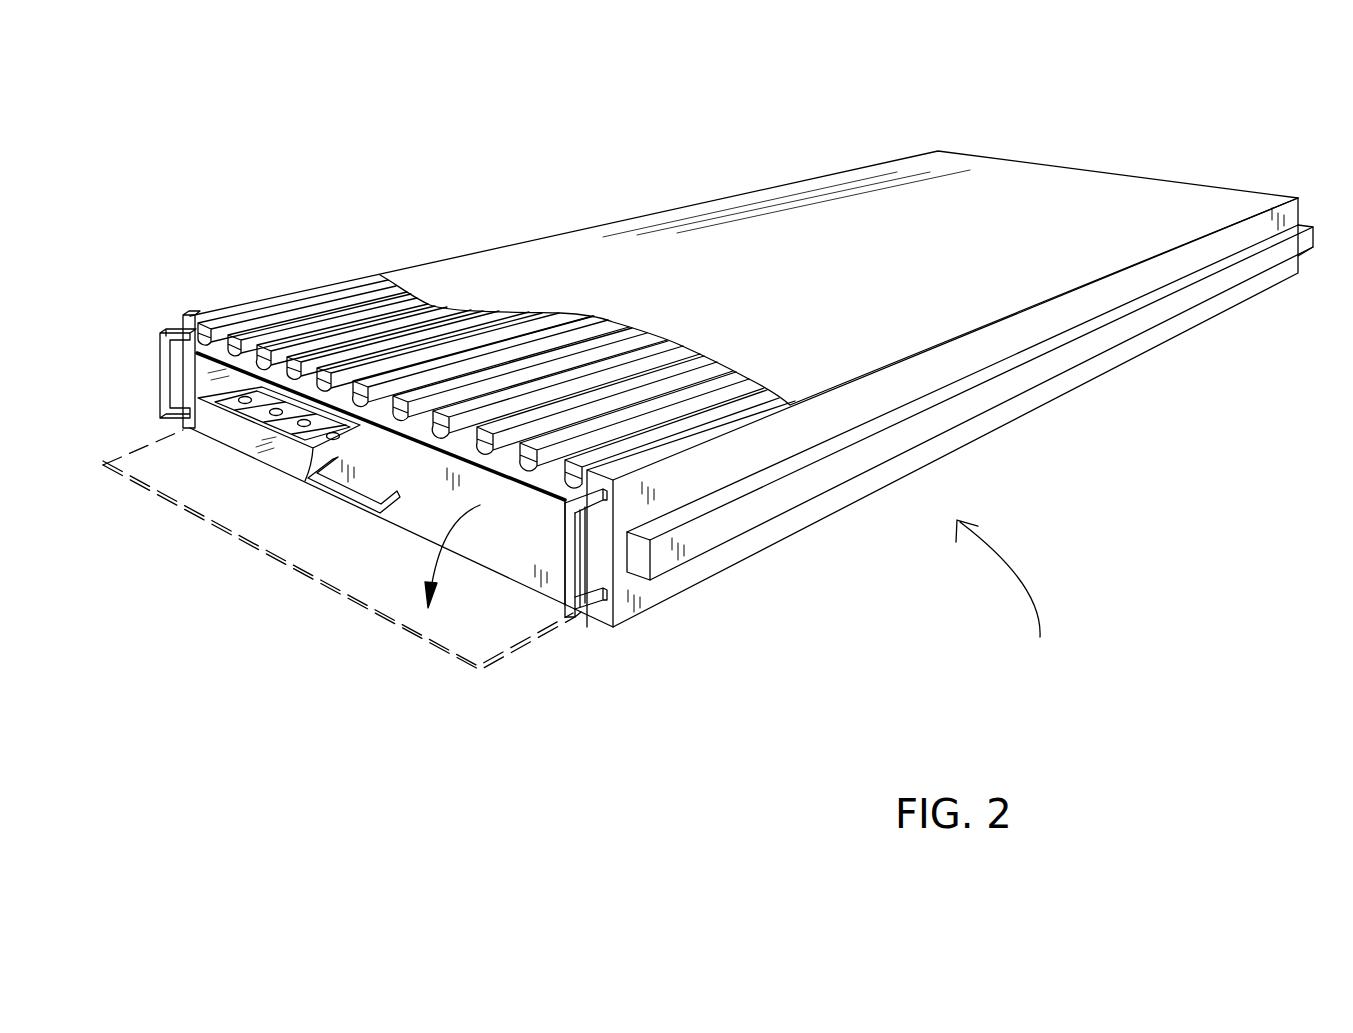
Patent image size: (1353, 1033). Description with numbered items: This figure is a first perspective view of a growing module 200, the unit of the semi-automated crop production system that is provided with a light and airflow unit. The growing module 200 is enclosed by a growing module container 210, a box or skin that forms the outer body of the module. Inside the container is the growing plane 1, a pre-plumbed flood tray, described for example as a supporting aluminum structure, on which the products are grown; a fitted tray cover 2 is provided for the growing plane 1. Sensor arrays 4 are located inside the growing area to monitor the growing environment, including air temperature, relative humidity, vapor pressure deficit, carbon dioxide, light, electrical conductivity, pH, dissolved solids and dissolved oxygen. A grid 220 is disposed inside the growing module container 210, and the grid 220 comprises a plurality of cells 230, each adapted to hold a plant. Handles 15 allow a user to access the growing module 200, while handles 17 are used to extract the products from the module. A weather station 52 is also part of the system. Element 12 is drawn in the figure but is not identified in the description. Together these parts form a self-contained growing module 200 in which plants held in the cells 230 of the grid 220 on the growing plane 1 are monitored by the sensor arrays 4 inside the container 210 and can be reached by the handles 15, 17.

The growing plane 1 is at (220, 425).
The fitted tray cover 2 is at (729, 360).
The sensor array 4 is at (1097, 170).
The rail 12 is at (1280, 287).
The handles to access growing module 15 is at (581, 577).
The handles to extract products 17 is at (347, 503).
The weather station 52 is at (497, 603).
The growing module 200 is at (1017, 599).
The growing module container 210 is at (625, 220).
The grid 220 is at (254, 404).
The cells 230 is at (238, 398).